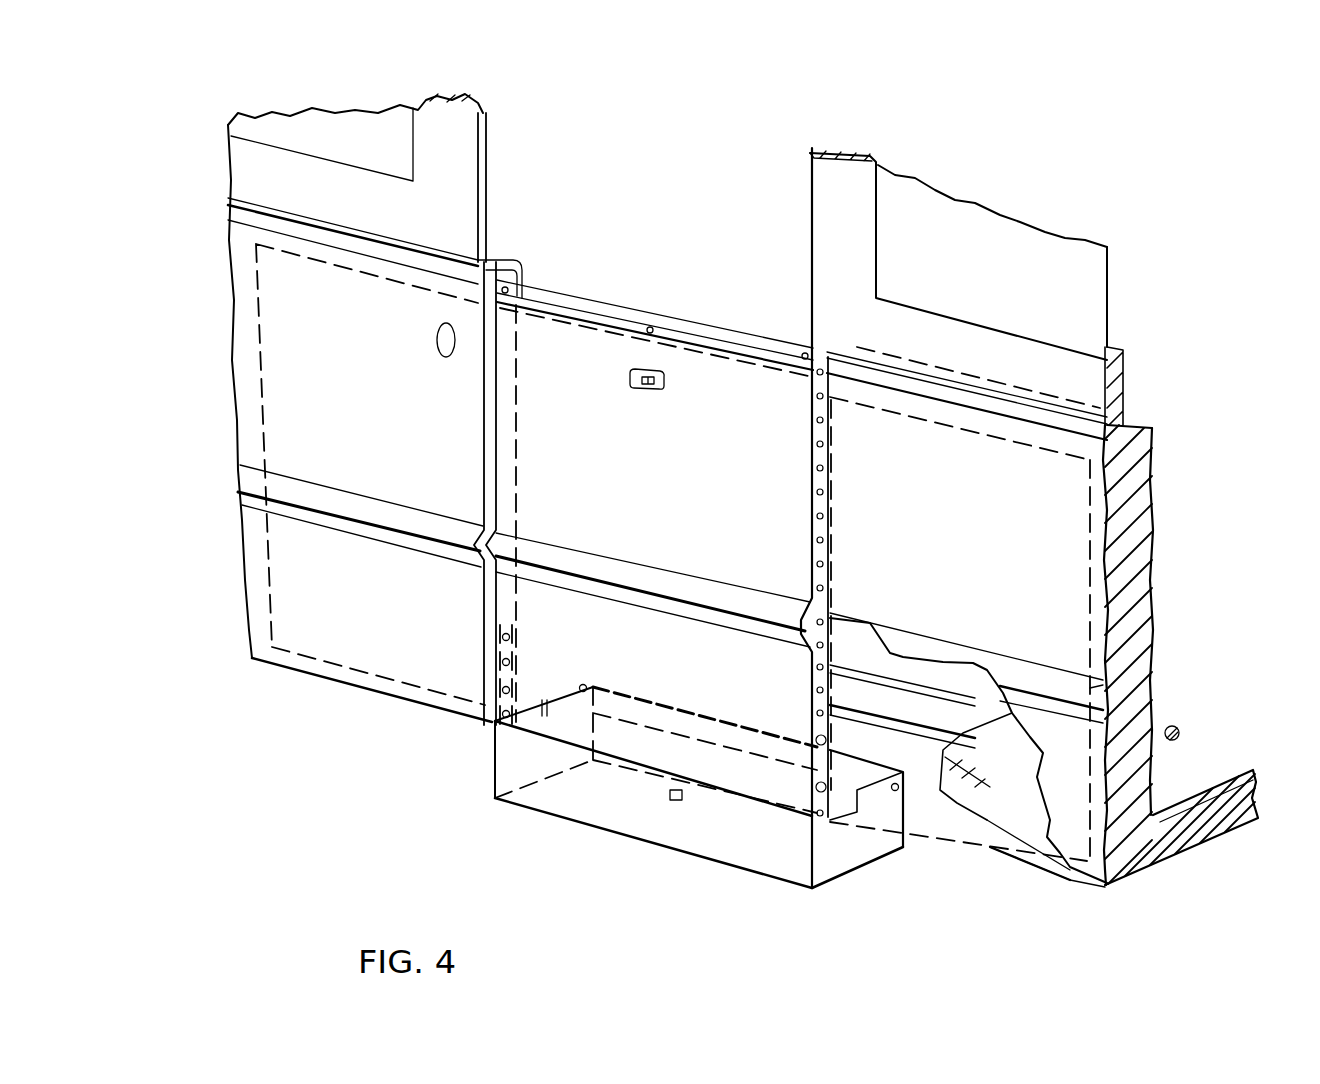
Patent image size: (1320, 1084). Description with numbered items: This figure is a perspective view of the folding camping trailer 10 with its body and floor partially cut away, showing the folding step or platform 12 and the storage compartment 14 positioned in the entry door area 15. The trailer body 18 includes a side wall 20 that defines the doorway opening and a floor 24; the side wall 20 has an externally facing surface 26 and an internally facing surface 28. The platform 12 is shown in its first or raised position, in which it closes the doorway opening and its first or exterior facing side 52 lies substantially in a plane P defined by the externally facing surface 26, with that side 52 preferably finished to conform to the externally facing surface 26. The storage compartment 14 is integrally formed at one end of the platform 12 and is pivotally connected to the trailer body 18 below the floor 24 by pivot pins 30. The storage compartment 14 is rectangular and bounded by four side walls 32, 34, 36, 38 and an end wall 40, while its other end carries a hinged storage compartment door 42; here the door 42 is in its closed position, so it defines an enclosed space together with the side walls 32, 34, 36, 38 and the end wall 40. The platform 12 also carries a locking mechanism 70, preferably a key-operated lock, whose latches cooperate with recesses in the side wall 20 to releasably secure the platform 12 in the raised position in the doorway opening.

The folding camping trailer 10 is at (1010, 189).
The folding step or platform 12 is at (565, 302).
The storage compartment 14 is at (670, 785).
The entry door area 15 is at (440, 457).
The trailer body 18 is at (1098, 533).
The side wall 20 is at (1137, 582).
The floor 24 is at (1186, 768).
The externally facing surface 26 is at (981, 544).
The internally facing surface 28 is at (1198, 616).
The pivot pins 30 is at (582, 695).
The side wall of storage compartment 32 is at (628, 806).
The side wall of storage compartment 34 is at (850, 852).
The side wall of storage compartment 36 is at (530, 757).
The side wall of storage compartment 38 is at (673, 737).
The end wall 40 is at (883, 812).
The storage compartment door 42 is at (738, 830).
The first or exterior facing side 52 is at (682, 494).
The locking mechanism 70 is at (637, 369).
The plane P is at (1093, 633).